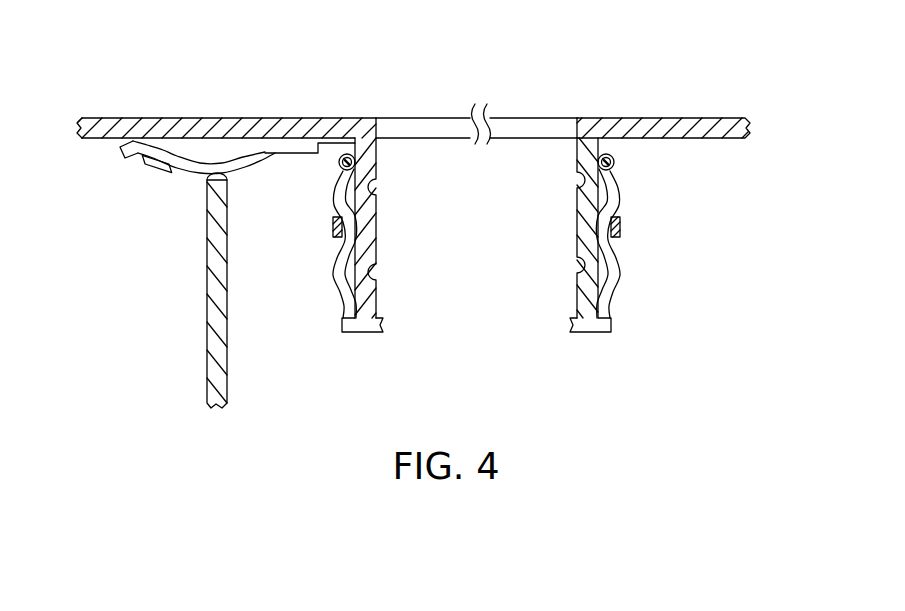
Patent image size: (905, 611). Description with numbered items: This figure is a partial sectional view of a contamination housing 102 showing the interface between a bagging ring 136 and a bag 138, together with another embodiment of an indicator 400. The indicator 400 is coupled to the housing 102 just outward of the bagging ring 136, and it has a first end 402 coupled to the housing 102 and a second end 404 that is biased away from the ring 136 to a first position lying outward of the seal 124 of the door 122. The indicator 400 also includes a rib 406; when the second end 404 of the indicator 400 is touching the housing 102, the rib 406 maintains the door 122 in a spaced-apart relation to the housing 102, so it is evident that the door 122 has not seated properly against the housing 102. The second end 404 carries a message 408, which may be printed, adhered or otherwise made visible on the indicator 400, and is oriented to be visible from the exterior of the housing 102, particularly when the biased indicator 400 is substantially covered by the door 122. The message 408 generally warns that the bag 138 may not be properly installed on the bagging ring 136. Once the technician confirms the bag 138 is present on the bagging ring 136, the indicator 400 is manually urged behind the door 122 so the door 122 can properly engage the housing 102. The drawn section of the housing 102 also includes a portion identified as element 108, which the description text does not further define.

The housing 102 is at (665, 117).
The window section of panel 108 is at (430, 118).
The door 122 is at (180, 290).
The seal 124 is at (203, 180).
The bagging ring 136 is at (370, 298).
The bag 138 is at (357, 334).
The indicator 400 is at (280, 153).
The first end 402 is at (293, 148).
The second end 404 is at (120, 153).
The rib 406 is at (203, 160).
The message 408 is at (158, 168).